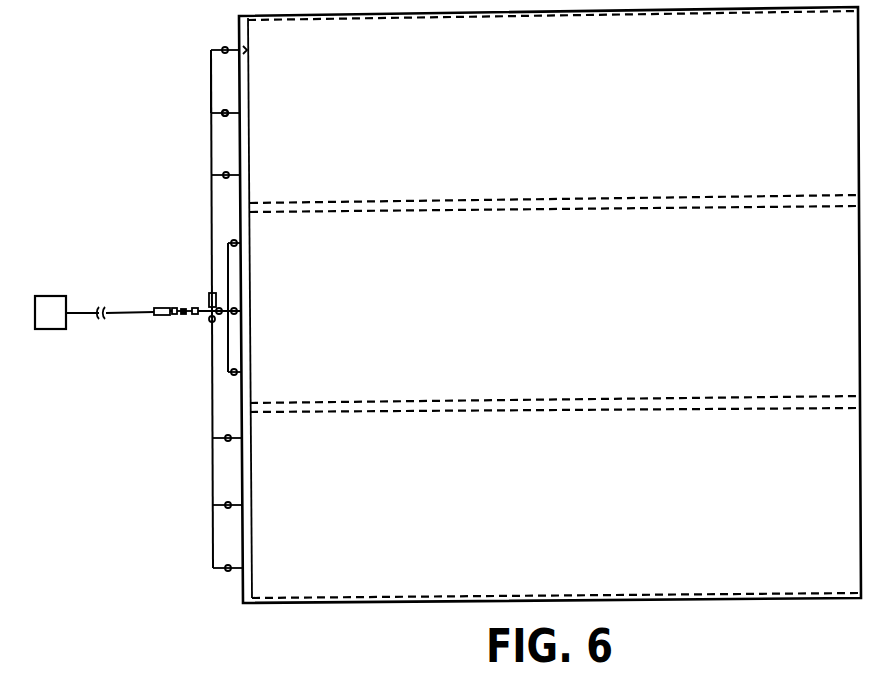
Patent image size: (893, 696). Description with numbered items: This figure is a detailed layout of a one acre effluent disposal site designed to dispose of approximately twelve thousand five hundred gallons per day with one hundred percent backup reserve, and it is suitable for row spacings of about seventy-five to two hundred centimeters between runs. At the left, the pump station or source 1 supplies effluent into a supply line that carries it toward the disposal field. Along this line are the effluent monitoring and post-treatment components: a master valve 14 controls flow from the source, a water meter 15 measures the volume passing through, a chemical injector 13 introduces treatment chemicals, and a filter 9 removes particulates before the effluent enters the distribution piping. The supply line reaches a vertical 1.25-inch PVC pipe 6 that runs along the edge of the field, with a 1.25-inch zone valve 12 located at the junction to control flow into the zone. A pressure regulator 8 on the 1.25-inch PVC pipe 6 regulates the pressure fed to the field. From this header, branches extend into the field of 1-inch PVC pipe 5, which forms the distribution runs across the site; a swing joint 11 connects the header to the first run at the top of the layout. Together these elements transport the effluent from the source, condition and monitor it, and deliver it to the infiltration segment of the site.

The pump station or source 1 is at (63, 296).
The 1-inch PVC pipe 5 is at (237, 38).
The 1.25-inch PVC pipe 6 is at (210, 79).
The pressure regulator 8 is at (210, 113).
The filter 9 is at (195, 307).
The swing joint 11 is at (205, 55).
The 1.25-inch zone valve 12 is at (211, 292).
The chemical injector 13 is at (176, 307).
The master valve 14 is at (155, 315).
The water meter 15 is at (175, 316).